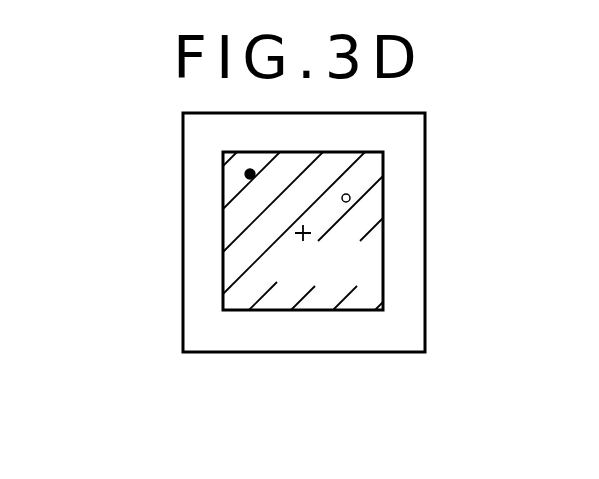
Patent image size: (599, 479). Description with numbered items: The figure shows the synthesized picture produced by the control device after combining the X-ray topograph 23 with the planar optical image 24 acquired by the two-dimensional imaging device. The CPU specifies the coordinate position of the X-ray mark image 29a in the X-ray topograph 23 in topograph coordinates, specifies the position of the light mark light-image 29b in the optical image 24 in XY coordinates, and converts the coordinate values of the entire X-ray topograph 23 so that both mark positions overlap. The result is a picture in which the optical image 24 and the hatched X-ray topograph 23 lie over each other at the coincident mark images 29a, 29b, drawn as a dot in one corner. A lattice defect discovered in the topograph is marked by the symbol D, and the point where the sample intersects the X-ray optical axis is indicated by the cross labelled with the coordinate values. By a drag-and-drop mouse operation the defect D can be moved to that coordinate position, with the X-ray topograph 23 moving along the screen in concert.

The X-ray topograph 23 is at (353, 311).
The optical image 24 is at (248, 352).
The X-ray mark image 29a is at (151, 203).
The light mark light-image 29b is at (249, 174).
The defect D is at (349, 195).